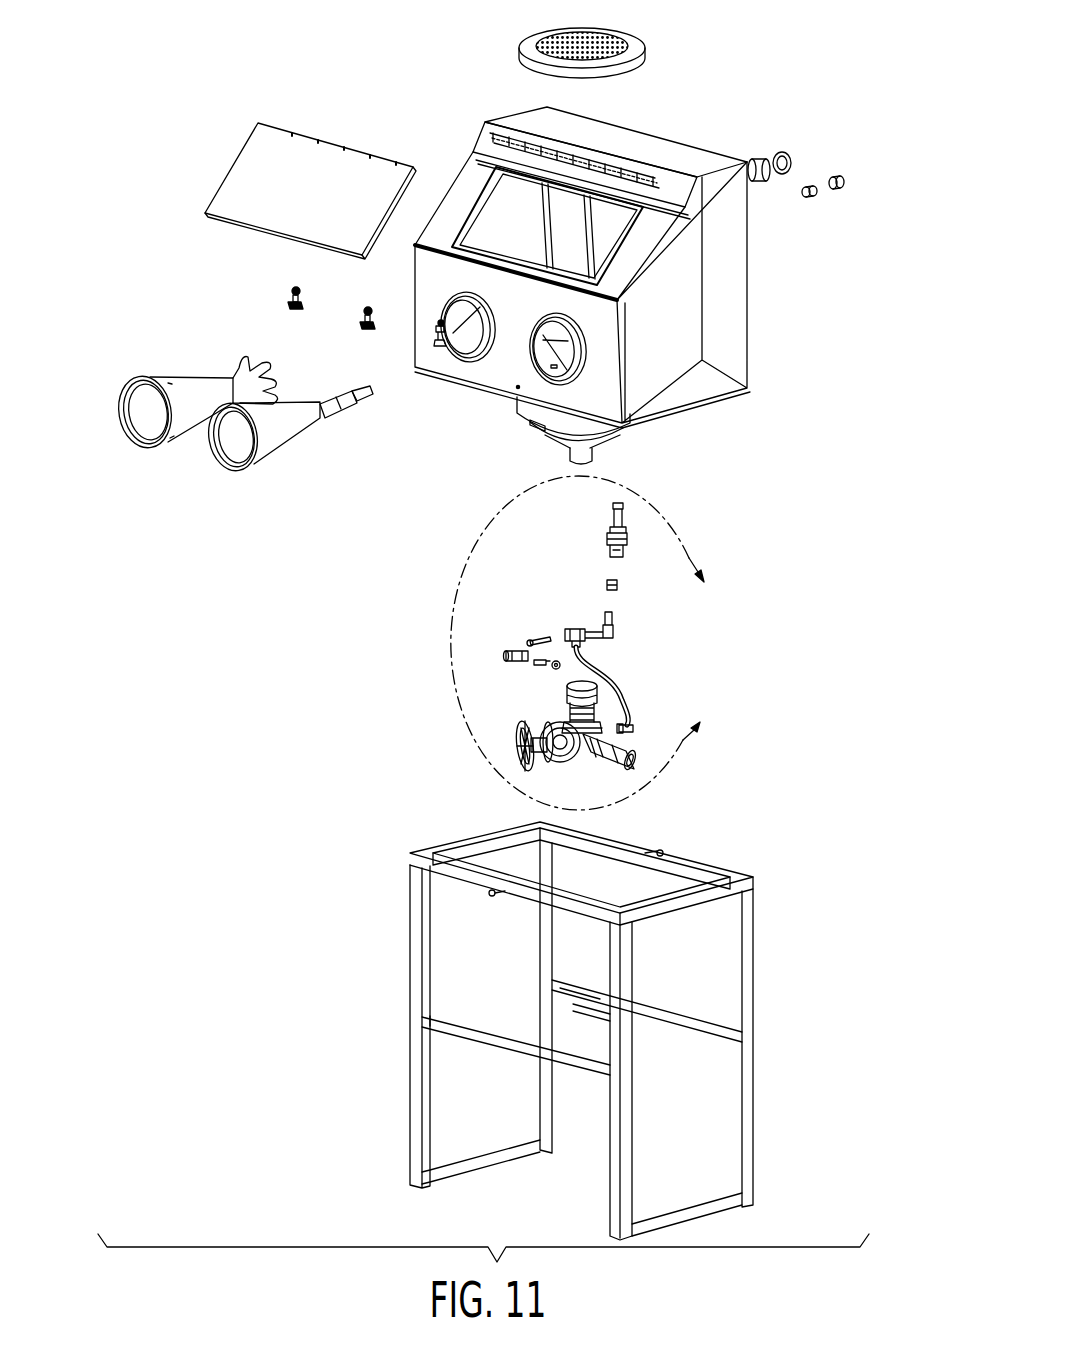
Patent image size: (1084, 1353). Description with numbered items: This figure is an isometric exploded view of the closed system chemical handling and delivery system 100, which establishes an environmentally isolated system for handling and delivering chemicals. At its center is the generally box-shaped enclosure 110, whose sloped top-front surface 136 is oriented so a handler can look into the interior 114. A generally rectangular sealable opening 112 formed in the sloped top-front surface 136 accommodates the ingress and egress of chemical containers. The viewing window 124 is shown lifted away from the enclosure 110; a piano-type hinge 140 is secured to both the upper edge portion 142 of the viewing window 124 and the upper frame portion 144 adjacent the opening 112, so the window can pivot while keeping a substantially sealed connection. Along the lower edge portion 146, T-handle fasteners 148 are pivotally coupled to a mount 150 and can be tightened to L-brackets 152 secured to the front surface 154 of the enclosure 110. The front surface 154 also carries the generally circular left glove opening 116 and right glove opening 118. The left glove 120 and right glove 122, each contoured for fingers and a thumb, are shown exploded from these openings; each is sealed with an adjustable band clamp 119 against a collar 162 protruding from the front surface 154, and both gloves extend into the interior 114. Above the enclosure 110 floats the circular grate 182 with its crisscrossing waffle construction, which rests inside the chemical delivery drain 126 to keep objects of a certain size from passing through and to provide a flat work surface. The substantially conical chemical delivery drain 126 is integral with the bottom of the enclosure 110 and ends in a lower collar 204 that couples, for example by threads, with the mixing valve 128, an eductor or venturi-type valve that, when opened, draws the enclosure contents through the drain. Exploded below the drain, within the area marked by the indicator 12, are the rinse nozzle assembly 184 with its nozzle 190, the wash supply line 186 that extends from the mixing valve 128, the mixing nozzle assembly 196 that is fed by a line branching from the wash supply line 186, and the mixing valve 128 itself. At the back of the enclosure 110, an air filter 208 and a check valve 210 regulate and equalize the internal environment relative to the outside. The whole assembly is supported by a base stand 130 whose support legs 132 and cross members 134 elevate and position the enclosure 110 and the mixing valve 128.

The closed system chemical handling and delivery system 100 is at (736, 46).
The media delivery system 12 is at (592, 643).
The enclosure 110 is at (605, 271).
The sealable opening 112 is at (473, 200).
The interior 114 is at (501, 236).
The left glove opening 116 is at (418, 284).
The right glove opening 118 is at (713, 397).
The adjustable band clamp 119 is at (161, 450).
The left glove 120 is at (243, 435).
The right glove 122 is at (300, 446).
The viewing window 124 is at (228, 166).
The chemical delivery drain 126 is at (575, 440).
The mixing valve 128 is at (515, 729).
The base stand 130 is at (545, 1032).
The support legs 132 is at (407, 942).
The cross members 134 is at (702, 862).
The sloped top-front surface 136 is at (628, 263).
The piano-type hinge 140 is at (613, 160).
The upper edge portion 142 is at (285, 121).
The upper frame portion 144 is at (683, 176).
The lower edge portion 146 is at (218, 223).
The T-handle fasteners 148 is at (290, 308).
The mount 150 is at (291, 291).
The L-brackets 152 is at (376, 331).
The front surface 154 is at (501, 315).
The collar 162 is at (532, 352).
The circular grate 182 is at (590, 28).
The rinse nozzle assembly 184 is at (592, 533).
The wash supply line 186 is at (617, 672).
The nozzle 190 is at (628, 508).
The mixing nozzle assembly 196 is at (492, 635).
The lower collar 204 is at (598, 452).
The air filter 208 is at (834, 177).
The check valve 210 is at (808, 198).